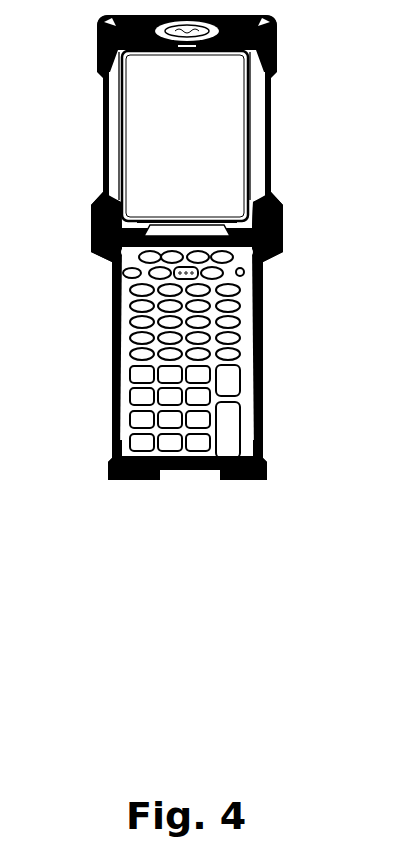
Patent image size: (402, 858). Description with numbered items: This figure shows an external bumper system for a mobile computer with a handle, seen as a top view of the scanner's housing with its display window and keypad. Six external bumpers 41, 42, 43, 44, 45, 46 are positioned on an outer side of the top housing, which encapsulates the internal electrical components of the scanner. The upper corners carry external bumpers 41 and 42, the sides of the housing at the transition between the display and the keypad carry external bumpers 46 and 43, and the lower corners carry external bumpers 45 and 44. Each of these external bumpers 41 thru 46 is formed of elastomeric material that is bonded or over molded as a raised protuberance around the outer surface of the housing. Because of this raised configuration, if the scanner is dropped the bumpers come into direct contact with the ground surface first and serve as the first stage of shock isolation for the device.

The external bumper 41 is at (86, 55).
The external bumper 42 is at (292, 56).
The external bumper 43 is at (290, 249).
The external bumper 44 is at (282, 459).
The external bumper 45 is at (100, 460).
The external bumper 46 is at (84, 252).